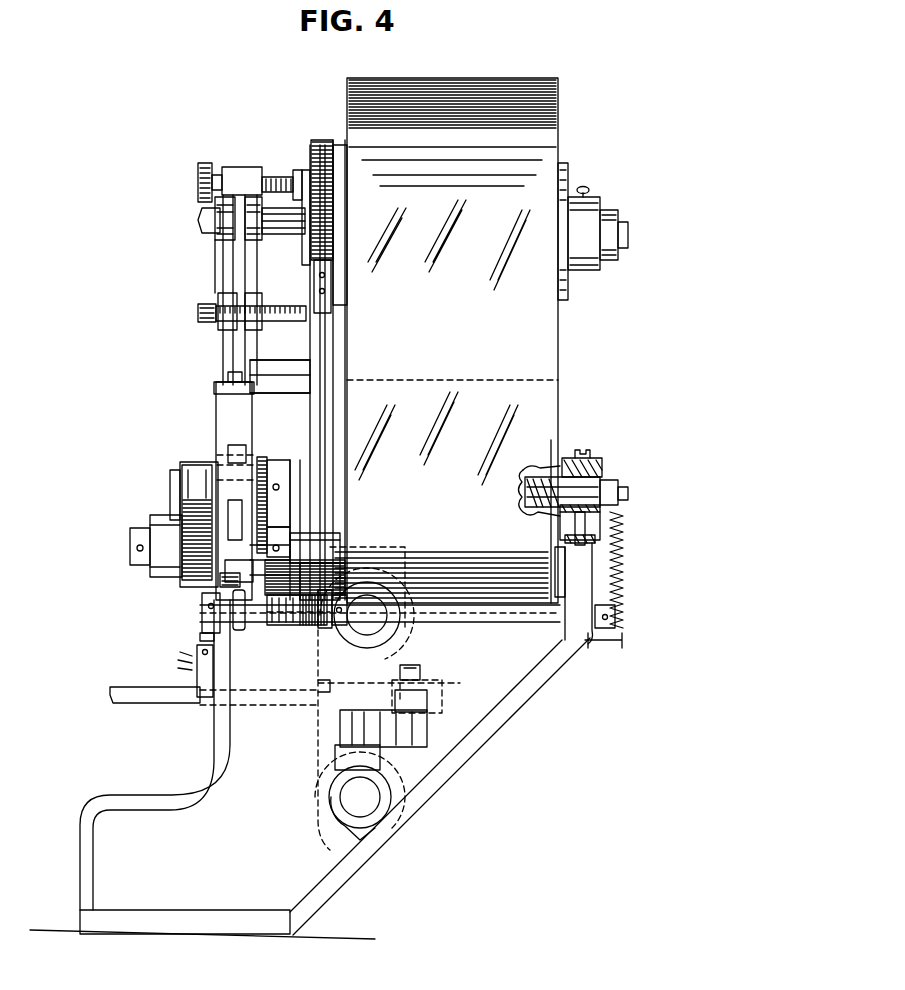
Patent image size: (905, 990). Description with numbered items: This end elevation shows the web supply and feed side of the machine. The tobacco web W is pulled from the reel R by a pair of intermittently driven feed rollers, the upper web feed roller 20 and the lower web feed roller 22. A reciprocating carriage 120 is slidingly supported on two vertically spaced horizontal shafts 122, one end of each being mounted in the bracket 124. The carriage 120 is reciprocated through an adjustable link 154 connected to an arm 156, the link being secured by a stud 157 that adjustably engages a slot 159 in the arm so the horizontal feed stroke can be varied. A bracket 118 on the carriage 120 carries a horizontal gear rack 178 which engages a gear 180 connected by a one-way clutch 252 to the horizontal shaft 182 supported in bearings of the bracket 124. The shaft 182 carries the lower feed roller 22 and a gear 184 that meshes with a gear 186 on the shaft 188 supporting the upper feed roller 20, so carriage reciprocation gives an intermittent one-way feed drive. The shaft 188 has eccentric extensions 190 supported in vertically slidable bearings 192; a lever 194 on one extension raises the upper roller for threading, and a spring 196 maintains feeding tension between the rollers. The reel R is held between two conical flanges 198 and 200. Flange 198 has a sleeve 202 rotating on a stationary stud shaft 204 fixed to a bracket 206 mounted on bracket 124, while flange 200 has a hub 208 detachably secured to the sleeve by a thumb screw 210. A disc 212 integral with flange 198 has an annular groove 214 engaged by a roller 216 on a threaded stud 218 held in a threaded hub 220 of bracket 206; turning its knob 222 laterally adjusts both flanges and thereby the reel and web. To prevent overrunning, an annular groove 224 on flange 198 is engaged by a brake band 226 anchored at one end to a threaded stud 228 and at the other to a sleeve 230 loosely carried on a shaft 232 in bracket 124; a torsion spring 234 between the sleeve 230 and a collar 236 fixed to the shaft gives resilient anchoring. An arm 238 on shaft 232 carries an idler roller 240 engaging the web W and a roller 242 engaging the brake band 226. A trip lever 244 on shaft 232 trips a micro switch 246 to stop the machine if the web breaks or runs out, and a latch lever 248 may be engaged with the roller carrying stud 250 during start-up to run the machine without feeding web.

The upper web feed roller 20 is at (336, 466).
The lower web feed roller 22 is at (328, 534).
The bracket 118 is at (215, 462).
The reciprocating carriage 120 is at (320, 745).
The horizontal shafts 122 is at (376, 622).
The bracket 124 is at (230, 426).
The adjustable link 154 is at (420, 728).
The arm 156 is at (438, 694).
The stud 157 is at (412, 668).
The slot 159 is at (435, 684).
The horizontal gear rack 178 is at (190, 497).
The gear 180 is at (170, 582).
The horizontal shaft 182 is at (130, 550).
The gear 184 is at (285, 525).
The gear 186 is at (262, 458).
The shaft 188 is at (540, 504).
The eccentric extensions 190 is at (225, 452).
The vertically slidable bearings 192 is at (610, 492).
The lever 194 is at (622, 505).
The spring 196 is at (624, 590).
The conical flange 198 is at (340, 145).
The conical flange 200 is at (566, 175).
The sleeve 202 is at (619, 216).
The stationary stud shaft 204 is at (262, 236).
The bracket 206 is at (226, 287).
The hub 208 is at (600, 205).
The thumb screw 210 is at (587, 187).
The disc 212 is at (300, 304).
The annular groove 214 is at (313, 276).
The roller 216 is at (308, 172).
The threaded stud 218 is at (288, 178).
The threaded hub 220 is at (250, 168).
The knob 222 is at (203, 170).
The annular groove 224 is at (322, 148).
The brake band 226 is at (318, 370).
The threaded stud 228 is at (215, 322).
The sleeve 230 is at (275, 628).
The shaft 232 is at (204, 608).
The torsion spring 234 is at (322, 632).
The collar 236 is at (334, 640).
The arm 238 is at (238, 628).
The idler roller 240 is at (322, 557).
The roller 242 is at (314, 574).
The trip lever 244 is at (207, 695).
The micro switch 246 is at (212, 712).
The latch lever 248 is at (228, 628).
The roller carrying stud 250 is at (248, 587).
The one-way clutch 252 is at (138, 530).
The reel R is at (571, 105).
The tobacco web W is at (538, 340).